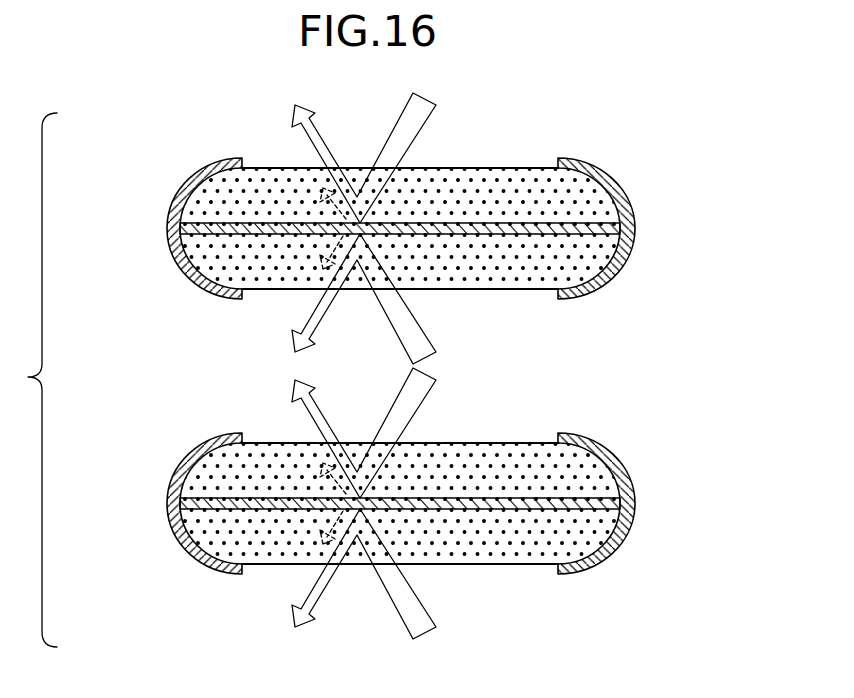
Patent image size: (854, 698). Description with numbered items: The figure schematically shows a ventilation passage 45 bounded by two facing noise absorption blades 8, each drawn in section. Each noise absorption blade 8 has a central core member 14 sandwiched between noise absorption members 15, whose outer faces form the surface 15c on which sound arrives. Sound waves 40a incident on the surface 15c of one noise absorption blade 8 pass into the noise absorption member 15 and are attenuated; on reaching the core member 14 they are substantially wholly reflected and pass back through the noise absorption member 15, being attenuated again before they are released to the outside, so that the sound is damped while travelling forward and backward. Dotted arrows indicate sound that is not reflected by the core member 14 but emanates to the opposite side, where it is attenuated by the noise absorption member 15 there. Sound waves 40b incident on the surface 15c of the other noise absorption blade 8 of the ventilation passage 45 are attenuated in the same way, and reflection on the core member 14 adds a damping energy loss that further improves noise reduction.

The noise absorption blade 8 is at (660, 195).
The core member 14 is at (267, 499).
The noise absorption member 15 is at (195, 483).
The surface 15c is at (523, 289).
The sound waves 40a is at (420, 392).
The sound waves 40b is at (421, 337).
The ventilation passage 45 is at (637, 362).